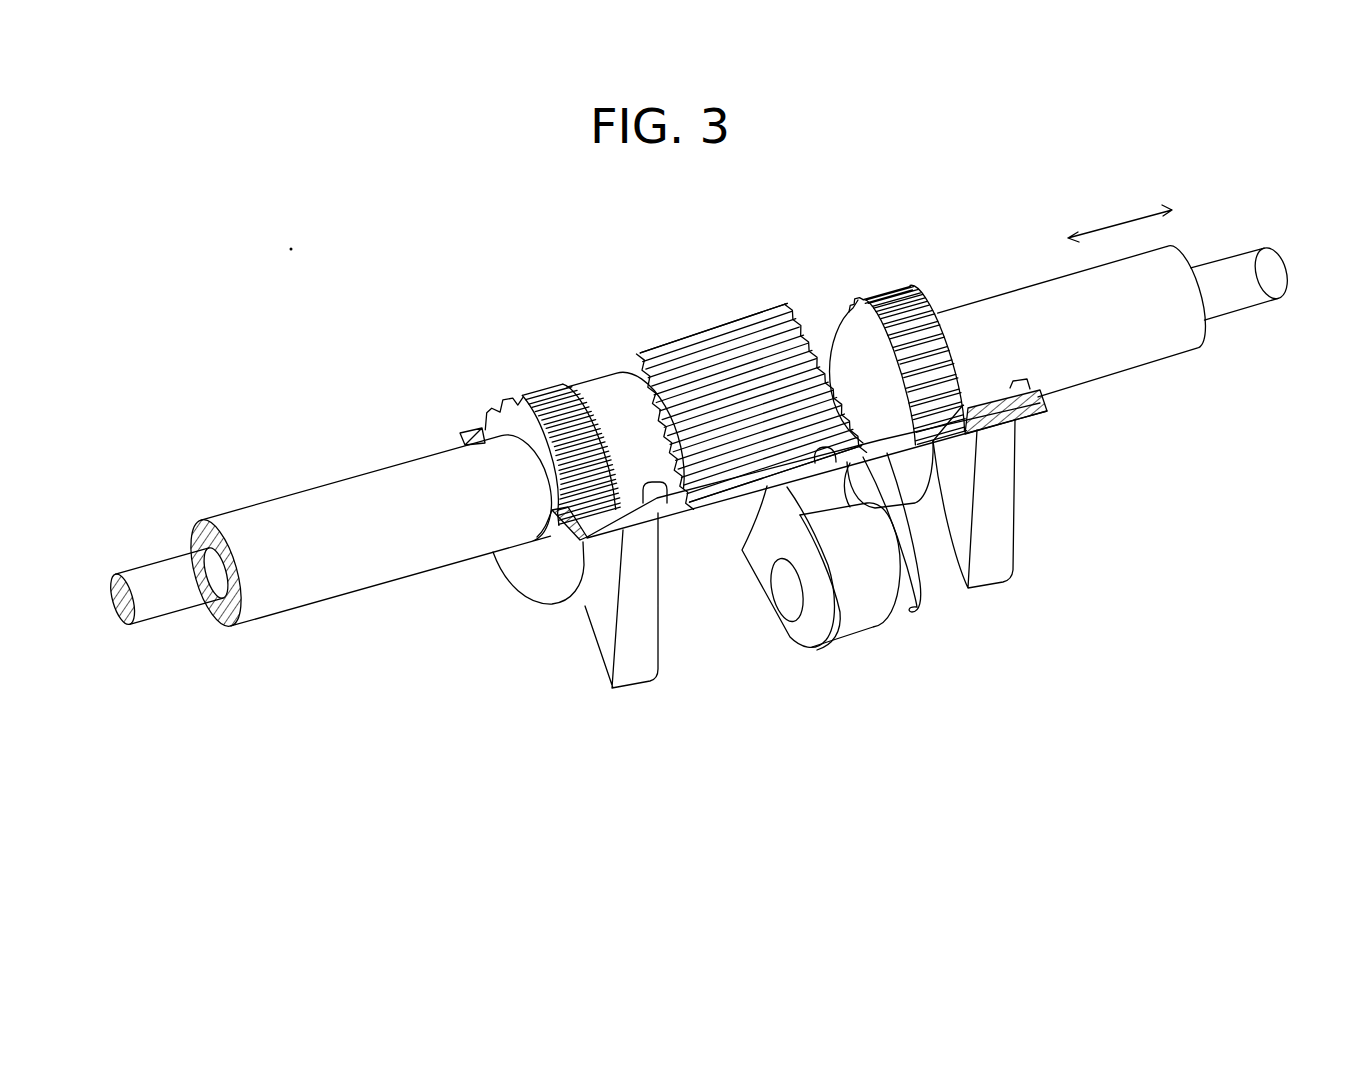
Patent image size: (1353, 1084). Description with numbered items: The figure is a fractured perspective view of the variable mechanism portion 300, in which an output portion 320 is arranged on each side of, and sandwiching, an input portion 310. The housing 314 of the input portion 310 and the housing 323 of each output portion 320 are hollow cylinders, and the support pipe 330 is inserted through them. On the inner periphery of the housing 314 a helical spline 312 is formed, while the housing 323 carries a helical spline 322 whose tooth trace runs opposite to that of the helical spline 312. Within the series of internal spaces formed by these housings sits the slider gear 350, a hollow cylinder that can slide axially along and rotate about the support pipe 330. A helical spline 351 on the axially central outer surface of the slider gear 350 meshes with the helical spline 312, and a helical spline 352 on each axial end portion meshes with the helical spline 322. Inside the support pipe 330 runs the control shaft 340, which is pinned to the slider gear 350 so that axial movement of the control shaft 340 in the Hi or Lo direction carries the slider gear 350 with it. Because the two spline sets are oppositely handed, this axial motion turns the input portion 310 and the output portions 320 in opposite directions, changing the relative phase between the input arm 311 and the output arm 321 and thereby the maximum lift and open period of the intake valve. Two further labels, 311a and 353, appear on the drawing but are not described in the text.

The variable mechanism portion 300 is at (1041, 666).
The input portion 310 is at (915, 578).
The input arm 311 is at (792, 633).
The arm body 311a is at (870, 618).
The helical spline 312 is at (834, 463).
The housing 314 is at (741, 588).
The output portion 320 is at (507, 573).
The output arm 321 is at (612, 663).
The helical spline 322 is at (680, 560).
The housing 323 is at (583, 596).
The support pipe 330 is at (317, 487).
The control shaft 340 is at (145, 562).
The slider gear 350 is at (781, 281).
The helical spline 351 is at (677, 345).
The helical spline 352 is at (517, 390).
The collar 353 is at (582, 393).